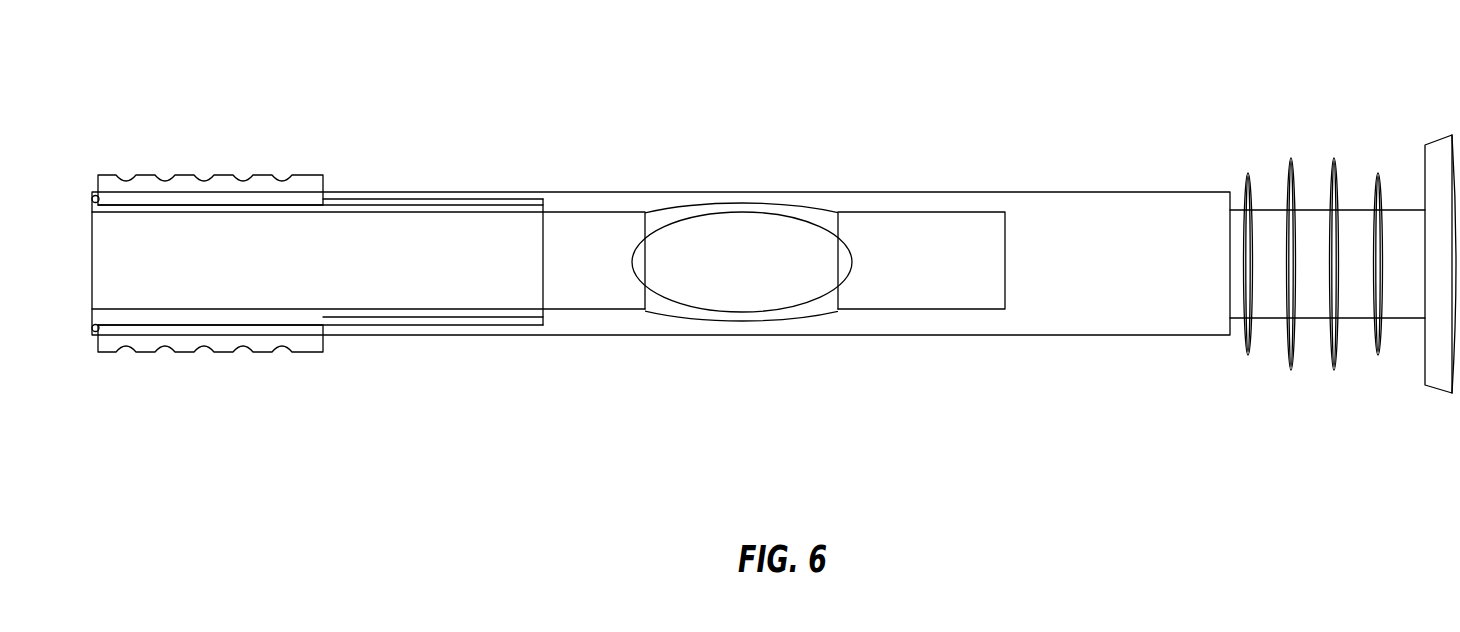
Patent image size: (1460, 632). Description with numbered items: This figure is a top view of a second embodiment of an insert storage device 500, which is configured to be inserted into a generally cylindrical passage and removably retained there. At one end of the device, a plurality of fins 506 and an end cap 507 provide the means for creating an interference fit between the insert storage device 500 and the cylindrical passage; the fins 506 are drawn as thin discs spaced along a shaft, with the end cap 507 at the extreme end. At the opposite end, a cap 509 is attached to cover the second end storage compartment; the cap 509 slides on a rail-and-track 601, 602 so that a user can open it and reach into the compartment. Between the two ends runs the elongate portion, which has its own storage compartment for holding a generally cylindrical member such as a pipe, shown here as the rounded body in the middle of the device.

The insert storage device 500 is at (774, 226).
The cap 509 is at (270, 176).
The rail-and-track 602 is at (490, 207).
The rail-and-track 601 is at (490, 318).
The end cap 507 is at (750, 283).
The fins 506 is at (1376, 352).